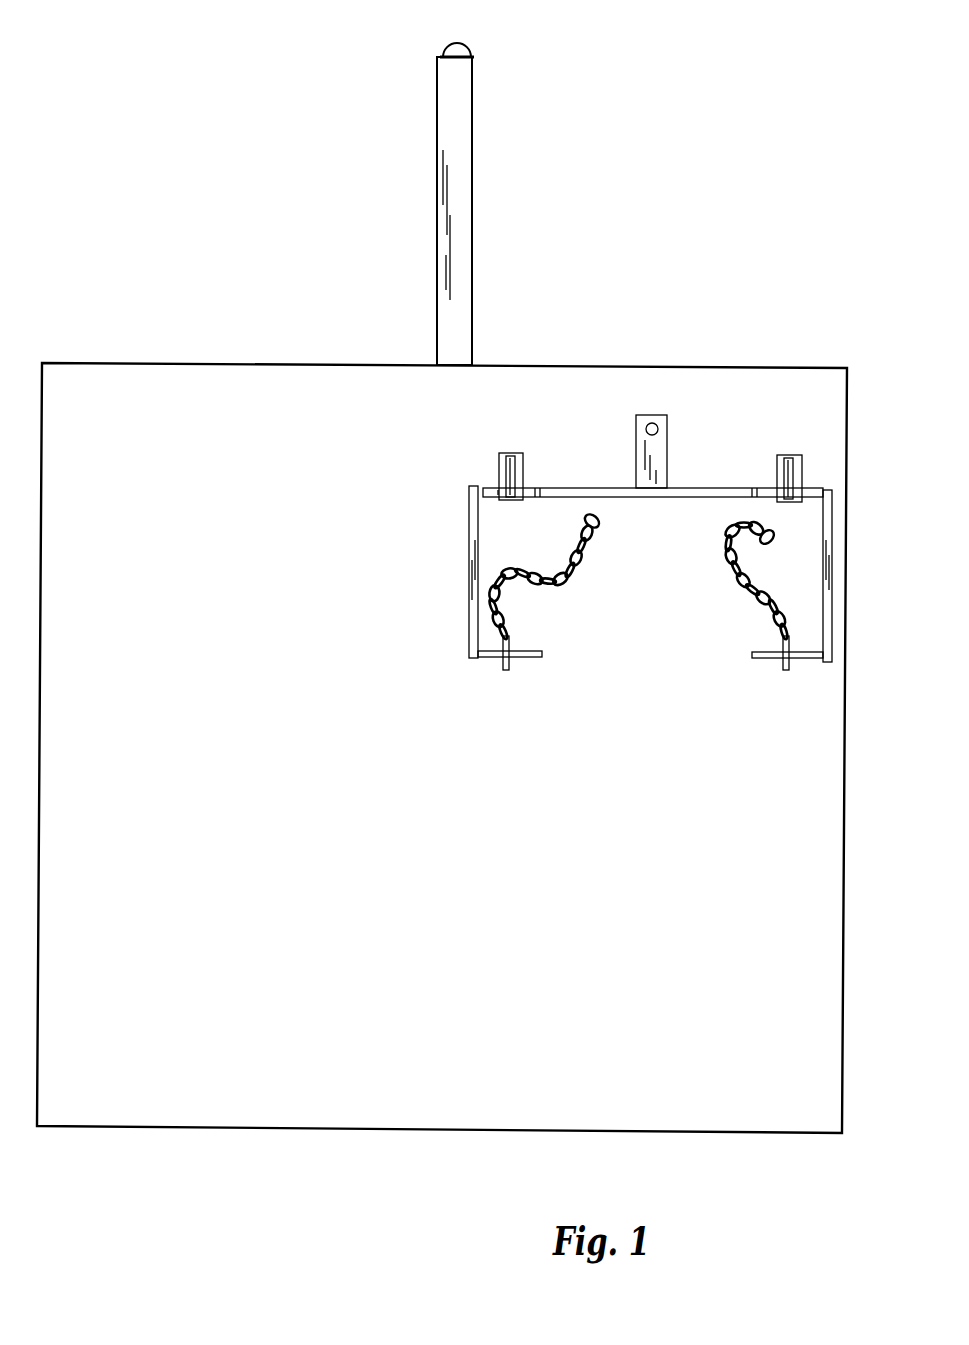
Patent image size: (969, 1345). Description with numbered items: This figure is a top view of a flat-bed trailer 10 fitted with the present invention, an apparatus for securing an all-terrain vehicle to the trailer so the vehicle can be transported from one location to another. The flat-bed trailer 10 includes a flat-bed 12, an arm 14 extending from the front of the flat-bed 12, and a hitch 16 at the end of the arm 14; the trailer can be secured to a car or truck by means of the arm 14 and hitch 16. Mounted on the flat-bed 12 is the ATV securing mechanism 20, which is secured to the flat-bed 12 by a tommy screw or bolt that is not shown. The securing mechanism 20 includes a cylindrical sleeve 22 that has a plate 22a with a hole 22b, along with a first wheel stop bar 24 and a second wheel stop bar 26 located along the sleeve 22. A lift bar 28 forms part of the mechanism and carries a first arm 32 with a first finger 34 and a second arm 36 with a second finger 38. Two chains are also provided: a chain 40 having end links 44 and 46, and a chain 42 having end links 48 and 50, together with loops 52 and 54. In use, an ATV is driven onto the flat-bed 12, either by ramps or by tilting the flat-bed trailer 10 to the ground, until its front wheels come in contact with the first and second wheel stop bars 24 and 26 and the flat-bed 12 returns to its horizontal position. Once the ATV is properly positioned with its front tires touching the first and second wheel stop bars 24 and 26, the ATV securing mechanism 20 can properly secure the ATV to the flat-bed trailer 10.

The flat-bed trailer 10 is at (172, 348).
The flat-bed 12 is at (343, 412).
The arm 14 is at (474, 118).
The hitch 16 is at (445, 47).
The ATV securing mechanism 20 is at (668, 682).
The cylindrical sleeve 22 is at (584, 490).
The plate 22a is at (667, 447).
The hole 22b is at (652, 415).
The first wheel stop bar 24 is at (786, 456).
The second wheel stop bar 26 is at (500, 453).
The lift bar 28 is at (470, 491).
The first arm 32 is at (832, 541).
The first finger 34 is at (802, 661).
The second arm 36 is at (470, 652).
The second finger 38 is at (532, 658).
The chain 40 is at (733, 585).
The chain 42 is at (583, 568).
The end link 44 is at (785, 670).
The end link 46 is at (771, 536).
The end link 48 is at (509, 670).
The end link 50 is at (598, 523).
The loop 52 is at (782, 461).
The loop 54 is at (518, 456).